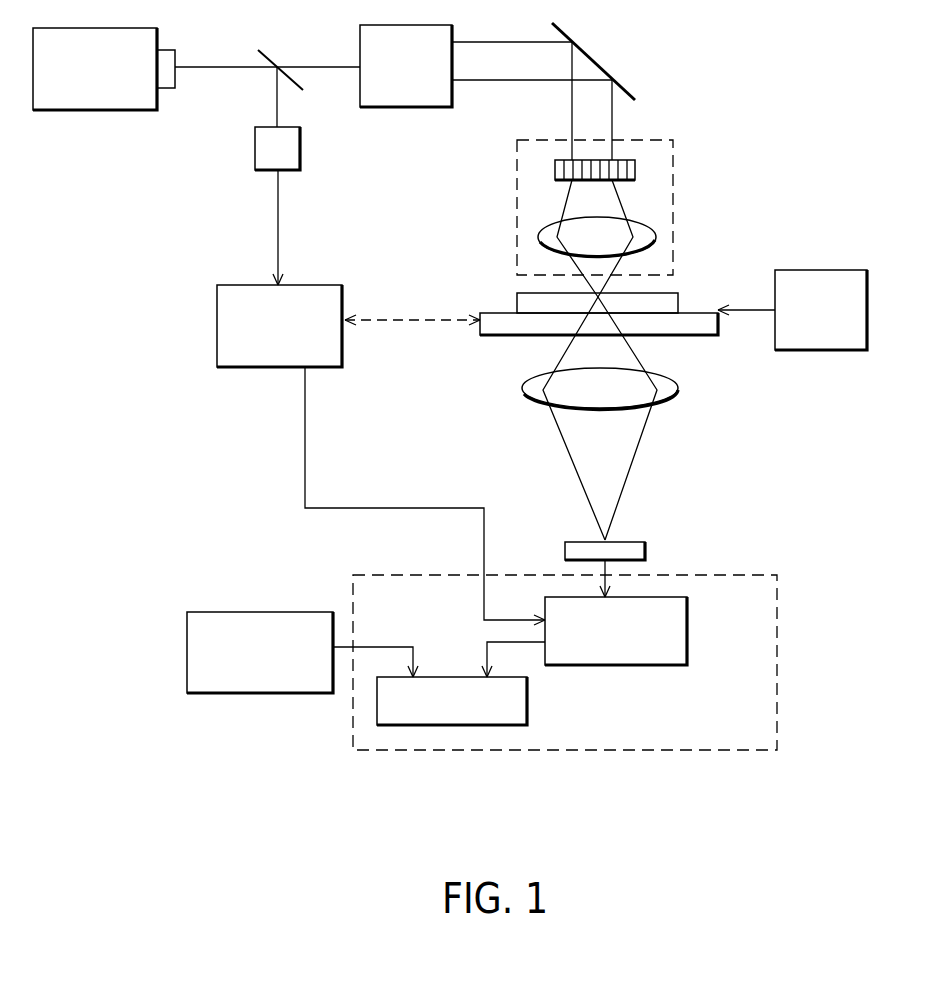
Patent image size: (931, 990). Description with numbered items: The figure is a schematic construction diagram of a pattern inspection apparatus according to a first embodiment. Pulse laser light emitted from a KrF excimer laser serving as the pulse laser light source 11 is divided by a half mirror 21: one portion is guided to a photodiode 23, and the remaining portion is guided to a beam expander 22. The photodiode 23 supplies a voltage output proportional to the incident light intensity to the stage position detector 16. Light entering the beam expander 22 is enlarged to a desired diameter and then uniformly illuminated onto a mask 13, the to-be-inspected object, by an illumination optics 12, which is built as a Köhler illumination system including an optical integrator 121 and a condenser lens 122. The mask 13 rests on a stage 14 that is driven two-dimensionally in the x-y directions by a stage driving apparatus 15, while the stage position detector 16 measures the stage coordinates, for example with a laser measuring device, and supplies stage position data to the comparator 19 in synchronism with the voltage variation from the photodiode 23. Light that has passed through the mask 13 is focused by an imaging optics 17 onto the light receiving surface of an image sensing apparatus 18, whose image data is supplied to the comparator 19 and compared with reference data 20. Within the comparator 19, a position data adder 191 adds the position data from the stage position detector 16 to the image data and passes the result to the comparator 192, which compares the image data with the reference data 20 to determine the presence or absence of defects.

The pulse laser light source 11 is at (125, 112).
The half mirror 21 is at (277, 61).
The beam expander 22 is at (395, 109).
The photodiode 23 is at (301, 148).
The illumination optics 12 is at (678, 152).
The optical integrator 121 is at (635, 170).
The condenser lens 122 is at (655, 237).
The mask 13 is at (678, 300).
The stage 14 is at (718, 336).
The stage driving apparatus 15 is at (845, 352).
The stage position detector 16 is at (217, 326).
The imaging optics 17 is at (678, 392).
The image sensing apparatus 18 is at (645, 550).
The comparator 19 is at (385, 752).
The position data adder 191 is at (688, 618).
The comparator 192 is at (528, 700).
The reference data 20 is at (187, 655).